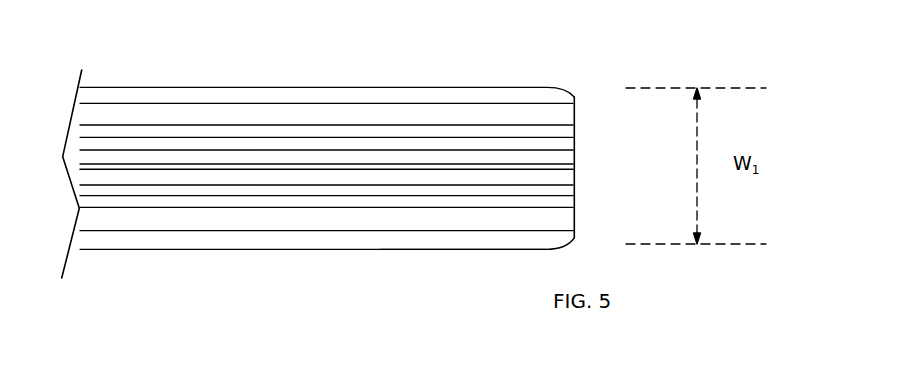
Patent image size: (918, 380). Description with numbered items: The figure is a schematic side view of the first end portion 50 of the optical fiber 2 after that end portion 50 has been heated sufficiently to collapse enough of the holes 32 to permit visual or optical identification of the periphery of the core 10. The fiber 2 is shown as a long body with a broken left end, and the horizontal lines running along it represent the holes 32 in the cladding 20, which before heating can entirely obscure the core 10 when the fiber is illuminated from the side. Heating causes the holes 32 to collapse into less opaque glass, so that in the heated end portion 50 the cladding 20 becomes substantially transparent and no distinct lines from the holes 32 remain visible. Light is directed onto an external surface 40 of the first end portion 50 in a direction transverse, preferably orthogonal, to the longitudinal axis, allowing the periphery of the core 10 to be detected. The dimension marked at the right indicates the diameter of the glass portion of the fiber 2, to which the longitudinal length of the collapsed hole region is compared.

The optical fiber 2 is at (501, 55).
The holes 32 is at (363, 100).
The cladding 20 is at (584, 107).
The core 10 is at (566, 163).
The external surface 40 is at (250, 258).
The first end portion 50 is at (396, 279).